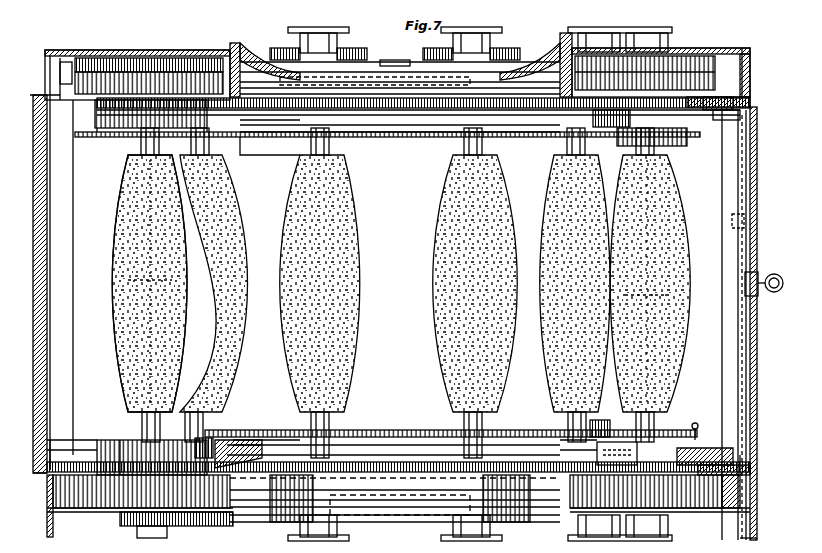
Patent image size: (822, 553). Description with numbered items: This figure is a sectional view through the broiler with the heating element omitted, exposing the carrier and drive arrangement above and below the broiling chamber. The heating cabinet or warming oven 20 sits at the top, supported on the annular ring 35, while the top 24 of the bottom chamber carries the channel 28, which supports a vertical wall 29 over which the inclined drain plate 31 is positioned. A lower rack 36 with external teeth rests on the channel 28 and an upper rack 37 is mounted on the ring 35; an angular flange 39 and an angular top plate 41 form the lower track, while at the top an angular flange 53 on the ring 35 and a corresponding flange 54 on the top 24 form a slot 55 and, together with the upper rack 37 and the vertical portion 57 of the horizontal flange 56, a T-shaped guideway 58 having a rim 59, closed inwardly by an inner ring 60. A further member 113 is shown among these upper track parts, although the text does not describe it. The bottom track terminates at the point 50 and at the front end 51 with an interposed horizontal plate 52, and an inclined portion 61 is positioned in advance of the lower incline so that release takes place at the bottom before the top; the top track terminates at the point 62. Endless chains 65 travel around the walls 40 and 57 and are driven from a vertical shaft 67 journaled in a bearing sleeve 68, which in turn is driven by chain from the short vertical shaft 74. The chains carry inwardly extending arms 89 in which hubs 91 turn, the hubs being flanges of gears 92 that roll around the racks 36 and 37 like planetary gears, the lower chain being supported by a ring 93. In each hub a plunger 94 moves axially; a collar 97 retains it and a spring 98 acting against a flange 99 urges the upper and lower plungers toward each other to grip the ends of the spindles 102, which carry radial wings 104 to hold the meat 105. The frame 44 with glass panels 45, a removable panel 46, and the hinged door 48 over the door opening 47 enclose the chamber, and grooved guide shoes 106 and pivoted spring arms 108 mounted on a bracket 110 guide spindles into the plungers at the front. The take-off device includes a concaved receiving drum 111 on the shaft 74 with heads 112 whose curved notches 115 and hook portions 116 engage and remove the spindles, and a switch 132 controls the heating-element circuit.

The heating cabinet or warming oven 20 is at (250, 52).
The top 24 is at (752, 100).
The channel 28 is at (275, 524).
The vertical wall 29 is at (410, 514).
The plate 31 is at (545, 70).
The annular or oval ring 35 is at (400, 78).
The lower rack 36 is at (260, 484).
The upper rack 37 is at (246, 309).
The angular flange 39 is at (752, 462).
The wall 40 is at (752, 490).
The angular top plate 41 is at (110, 432).
The frame 44 is at (745, 222).
The panels 45 is at (36, 322).
The removable panel or door 46 is at (42, 300).
The door opening 47 is at (757, 181).
The hinged panel 48 is at (752, 476).
The point 50 is at (262, 440).
The point 51 is at (640, 450).
The horizontal plate 52 is at (505, 432).
The angular flange 53 is at (50, 55).
The angular flange 54 is at (725, 118).
The slot 55 is at (660, 120).
The horizontal flange 56 is at (47, 93).
The vertical portion 57 is at (80, 58).
The T-shaped guideway 58 is at (97, 112).
The rim 59 is at (748, 52).
The inner ring 60 is at (235, 45).
The inclined portion 61 is at (278, 135).
The point 62 is at (270, 139).
The endless drive members or chains 65 is at (75, 55).
The vertical shaft 67 is at (150, 50).
The bearing sleeve 68 is at (130, 395).
The short vertical shaft 74 is at (392, 62).
The inwardly extending arms 89 is at (190, 58).
The hubs 91 is at (180, 58).
The gears 92 is at (96, 70).
The ring 93 is at (52, 520).
The plunger 94 is at (355, 528).
The collar 97 is at (128, 50).
The springs 98 is at (580, 442).
The enlargement or flange 99 is at (145, 140).
The spindles 102 is at (125, 175).
The radial wings 104 is at (130, 250).
The meat 105 is at (205, 282).
The grooved guide shoes 106 is at (735, 108).
The pivoted spring arms 108 is at (670, 145).
The plate or bracket 110 is at (505, 150).
The concaved receiving drum 111 is at (396, 289).
The heads 112 is at (395, 140).
The bar 113 is at (400, 96).
The curved notches 115 is at (332, 428).
The hook portions 116 is at (335, 410).
The switch 132 is at (735, 455).